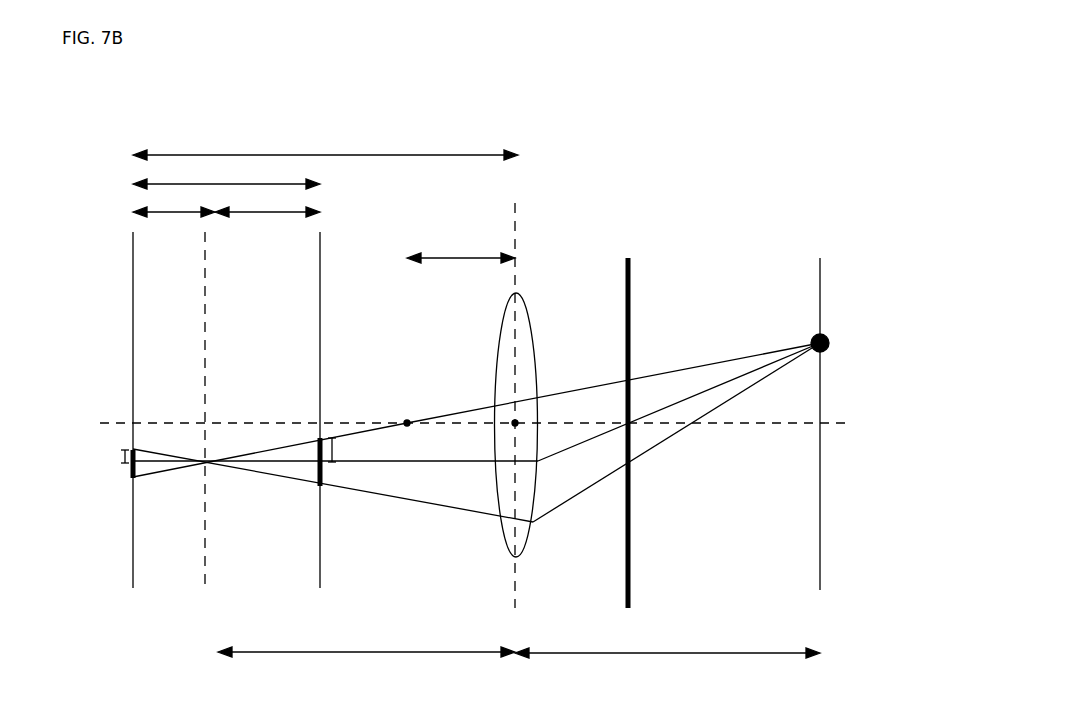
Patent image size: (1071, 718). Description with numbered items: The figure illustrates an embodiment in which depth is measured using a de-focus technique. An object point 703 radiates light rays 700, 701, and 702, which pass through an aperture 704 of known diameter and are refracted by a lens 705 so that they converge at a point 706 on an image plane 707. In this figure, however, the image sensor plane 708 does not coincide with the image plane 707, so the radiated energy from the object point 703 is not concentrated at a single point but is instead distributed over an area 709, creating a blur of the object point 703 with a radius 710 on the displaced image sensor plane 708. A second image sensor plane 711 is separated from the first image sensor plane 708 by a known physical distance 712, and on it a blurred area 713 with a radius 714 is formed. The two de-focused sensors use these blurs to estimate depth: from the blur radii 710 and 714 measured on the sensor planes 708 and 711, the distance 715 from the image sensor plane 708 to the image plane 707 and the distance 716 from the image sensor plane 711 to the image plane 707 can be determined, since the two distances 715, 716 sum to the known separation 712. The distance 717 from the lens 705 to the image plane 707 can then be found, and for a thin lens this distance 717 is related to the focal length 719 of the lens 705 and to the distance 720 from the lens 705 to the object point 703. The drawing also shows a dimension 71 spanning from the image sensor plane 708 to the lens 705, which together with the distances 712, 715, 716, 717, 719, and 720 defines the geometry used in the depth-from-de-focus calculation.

The distance between object plane and lens 71 is at (325, 146).
The known physical distance 712 is at (226, 175).
The distance 715 is at (174, 202).
The distance 716 is at (267, 202).
The focal length 719 is at (461, 249).
The distance 717 is at (366, 642).
The distance 720 is at (667, 645).
The light ray 700 is at (712, 363).
The light ray 701 is at (692, 398).
The light ray 702 is at (664, 442).
The object point 703 is at (828, 340).
The aperture 704 is at (624, 421).
The lens 705 is at (530, 538).
The point 706 is at (208, 466).
The image plane 707 is at (212, 424).
The image sensor plane 708 is at (134, 424).
The area 709 is at (131, 476).
The radius 710 is at (107, 460).
The image sensor plane 711 is at (316, 424).
The blurred area 713 is at (323, 478).
The radius 714 is at (350, 450).